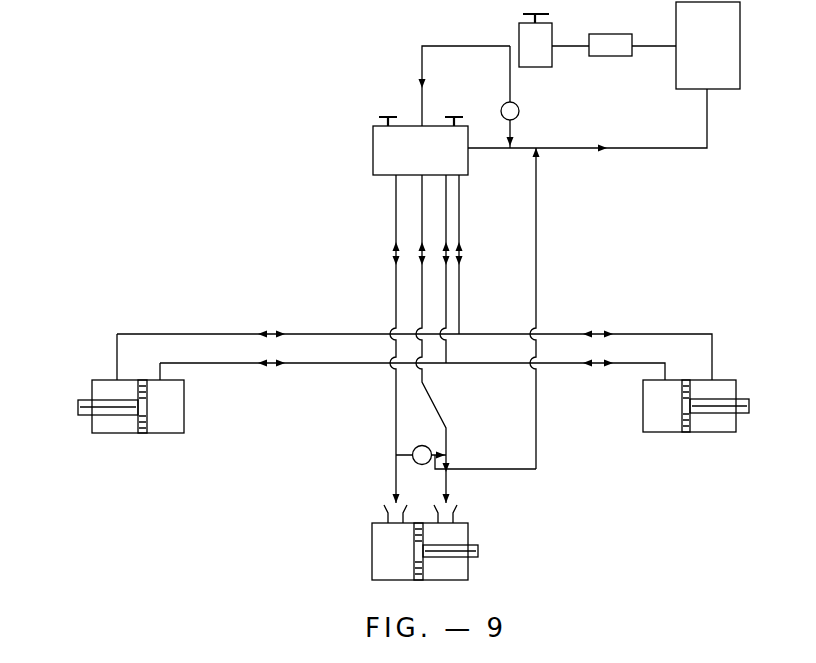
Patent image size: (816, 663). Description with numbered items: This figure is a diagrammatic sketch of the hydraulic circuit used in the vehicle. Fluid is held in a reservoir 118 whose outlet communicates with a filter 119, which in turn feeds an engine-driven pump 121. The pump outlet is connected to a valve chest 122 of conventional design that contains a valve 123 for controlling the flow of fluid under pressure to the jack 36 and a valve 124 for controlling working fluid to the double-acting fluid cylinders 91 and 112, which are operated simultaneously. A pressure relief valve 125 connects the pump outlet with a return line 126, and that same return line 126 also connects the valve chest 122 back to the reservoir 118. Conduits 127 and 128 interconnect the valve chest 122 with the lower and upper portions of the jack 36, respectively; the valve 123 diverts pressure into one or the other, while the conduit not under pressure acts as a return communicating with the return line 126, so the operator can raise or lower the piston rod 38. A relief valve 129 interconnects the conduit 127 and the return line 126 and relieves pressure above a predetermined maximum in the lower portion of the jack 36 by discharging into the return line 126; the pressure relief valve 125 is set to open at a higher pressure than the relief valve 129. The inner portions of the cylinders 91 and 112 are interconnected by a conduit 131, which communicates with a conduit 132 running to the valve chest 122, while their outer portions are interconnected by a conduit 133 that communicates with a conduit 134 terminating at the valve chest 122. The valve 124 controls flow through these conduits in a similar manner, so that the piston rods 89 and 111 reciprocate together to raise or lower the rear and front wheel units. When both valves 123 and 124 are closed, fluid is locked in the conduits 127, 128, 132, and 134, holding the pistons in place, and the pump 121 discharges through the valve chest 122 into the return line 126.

The jack 36 is at (460, 533).
The piston rod 38 is at (478, 551).
The piston rod 89 is at (744, 413).
The double-acting fluid cylinder 91 is at (663, 418).
The piston rod 111 is at (78, 403).
The double-acting fluid cylinder 112 is at (170, 427).
The reservoir 118 is at (732, 38).
The filter 119 is at (613, 42).
The pump 121 is at (527, 33).
The valve chest 122 is at (373, 153).
The valve 123 is at (388, 115).
The valve 124 is at (454, 115).
The pressure relief valve 125 is at (520, 109).
The return line 126 is at (643, 149).
The conduit 127 is at (396, 226).
The conduit 128 is at (422, 218).
The relief valve 129 is at (424, 455).
The conduit 131 is at (550, 365).
The conduit 132 is at (446, 300).
The conduit 133 is at (636, 334).
The conduit 134 is at (459, 209).